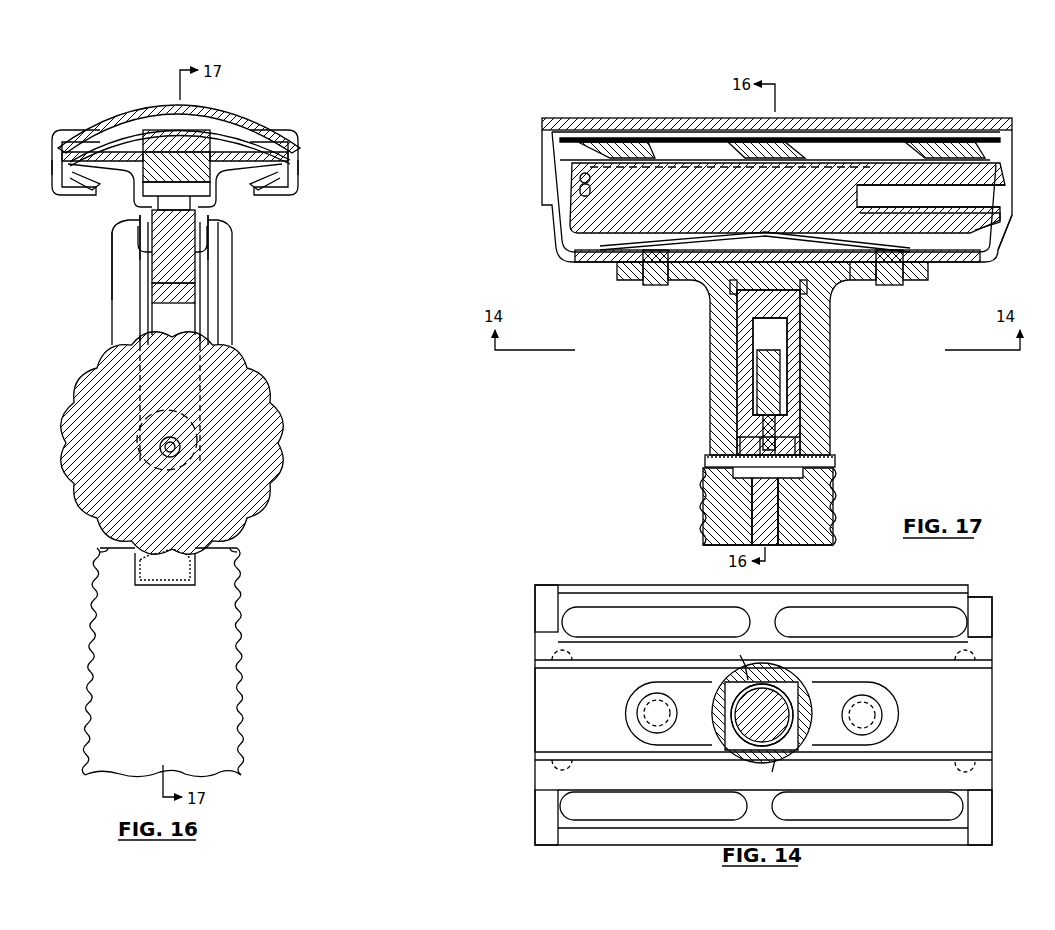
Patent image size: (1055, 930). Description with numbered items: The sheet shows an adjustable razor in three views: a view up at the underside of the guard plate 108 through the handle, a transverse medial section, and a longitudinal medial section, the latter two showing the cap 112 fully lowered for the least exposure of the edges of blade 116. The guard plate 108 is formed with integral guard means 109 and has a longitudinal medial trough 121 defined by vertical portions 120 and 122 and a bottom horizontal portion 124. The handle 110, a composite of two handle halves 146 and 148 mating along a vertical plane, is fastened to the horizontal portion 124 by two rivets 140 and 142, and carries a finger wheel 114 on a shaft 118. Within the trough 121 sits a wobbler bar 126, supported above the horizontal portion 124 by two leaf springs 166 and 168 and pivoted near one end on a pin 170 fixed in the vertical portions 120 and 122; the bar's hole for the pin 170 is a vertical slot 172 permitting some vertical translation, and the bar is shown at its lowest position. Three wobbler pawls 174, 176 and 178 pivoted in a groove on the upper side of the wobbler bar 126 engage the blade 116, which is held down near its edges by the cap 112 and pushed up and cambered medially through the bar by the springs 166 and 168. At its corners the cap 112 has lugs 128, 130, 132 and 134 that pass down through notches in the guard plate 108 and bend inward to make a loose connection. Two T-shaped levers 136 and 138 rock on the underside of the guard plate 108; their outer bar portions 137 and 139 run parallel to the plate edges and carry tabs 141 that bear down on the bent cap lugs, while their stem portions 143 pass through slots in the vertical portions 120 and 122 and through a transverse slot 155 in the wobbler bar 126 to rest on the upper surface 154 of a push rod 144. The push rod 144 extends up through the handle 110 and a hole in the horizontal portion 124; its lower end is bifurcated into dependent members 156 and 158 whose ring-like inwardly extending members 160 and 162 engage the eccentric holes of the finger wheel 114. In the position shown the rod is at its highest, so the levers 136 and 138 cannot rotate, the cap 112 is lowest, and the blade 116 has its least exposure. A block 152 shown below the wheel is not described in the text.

In FIG. 16, the guard plate 108 is at (300, 140).
In FIG. 17, the guard plate 108 is at (1032, 274).
In FIG. 14, the guard plate 108 is at (938, 594).
In FIG. 16, the guard means 109 is at (52, 170).
In FIG. 16, the handle 110 is at (256, 700).
In FIG. 17, the handle 110 is at (840, 486).
In FIG. 14, the handle 110 is at (790, 760).
In FIG. 16, the cap 112 is at (224, 107).
In FIG. 17, the cap 112 is at (795, 116).
In FIG. 16, the finger wheel 114 is at (292, 456).
In FIG. 17, the finger wheel 114 is at (746, 486).
In FIG. 16, the blade 116 is at (257, 150).
In FIG. 17, the blade 116 is at (852, 135).
In FIG. 17, the shaft 118 is at (835, 463).
In FIG. 16, the vertical portion 120 is at (212, 232).
In FIG. 16, the trough 121 is at (224, 246).
In FIG. 16, the vertical portion 122 is at (128, 238).
In FIG. 17, the horizontal portion 124 is at (575, 266).
In FIG. 14, the horizontal portion 124 is at (535, 712).
In FIG. 16, the wobbler bar 126 is at (140, 135).
In FIG. 17, the wobbler bar 126 is at (570, 218).
In FIG. 16, the cap lug 128 is at (290, 200).
In FIG. 14, the cap lug 128 is at (535, 818).
In FIG. 14, the cap lug 130 is at (992, 830).
In FIG. 14, the cap lug 132 is at (992, 622).
In FIG. 16, the cap lug 134 is at (78, 195).
In FIG. 14, the cap lug 134 is at (535, 598).
In FIG. 16, the lever 136 is at (232, 204).
In FIG. 14, the lever 136 is at (996, 786).
In FIG. 14, the bar portion 137 is at (885, 786).
In FIG. 16, the lever 138 is at (128, 218).
In FIG. 14, the lever 138 is at (1018, 664).
In FIG. 14, the bar portion 139 is at (820, 646).
In FIG. 17, the rivet 140 is at (890, 287).
In FIG. 14, the rivet 140 is at (880, 712).
In FIG. 14, the tab 141 is at (545, 640).
In FIG. 17, the rivet 142 is at (650, 286).
In FIG. 14, the rivet 142 is at (645, 700).
In FIG. 16, the stem portion 143 is at (140, 246).
In FIG. 17, the stem portion 143 is at (712, 286).
In FIG. 14, the stem portion 143 is at (740, 655).
In FIG. 17, the push rod 144 is at (812, 320).
In FIG. 14, the push rod 144 is at (750, 745).
In FIG. 17, the handle half 146 is at (836, 522).
In FIG. 14, the handle half 146 is at (900, 727).
In FIG. 16, the handle half 148 is at (241, 632).
In FIG. 17, the handle half 148 is at (700, 504).
In FIG. 14, the handle half 148 is at (637, 715).
In FIG. 16, the locking block 152 is at (198, 568).
In FIG. 16, the upper surface 154 is at (174, 195).
In FIG. 16, the transverse slot 155 is at (175, 185).
In FIG. 17, the transverse slot 155 is at (835, 282).
In FIG. 17, the dependent member 156 is at (800, 363).
In FIG. 16, the dependent member 158 is at (200, 332).
In FIG. 17, the dependent member 158 is at (737, 365).
In FIG. 17, the inwardly extending member 160 is at (790, 433).
In FIG. 17, the inwardly extending member 162 is at (740, 437).
In FIG. 17, the leaf spring 166 is at (598, 250).
In FIG. 17, the leaf spring 168 is at (965, 255).
In FIG. 17, the pin 170 is at (580, 178).
In FIG. 17, the vertical slot 172 is at (580, 192).
In FIG. 17, the wobbler pawl 174 is at (640, 138).
In FIG. 17, the wobbler pawl 176 is at (738, 140).
In FIG. 17, the wobbler pawl 178 is at (955, 140).